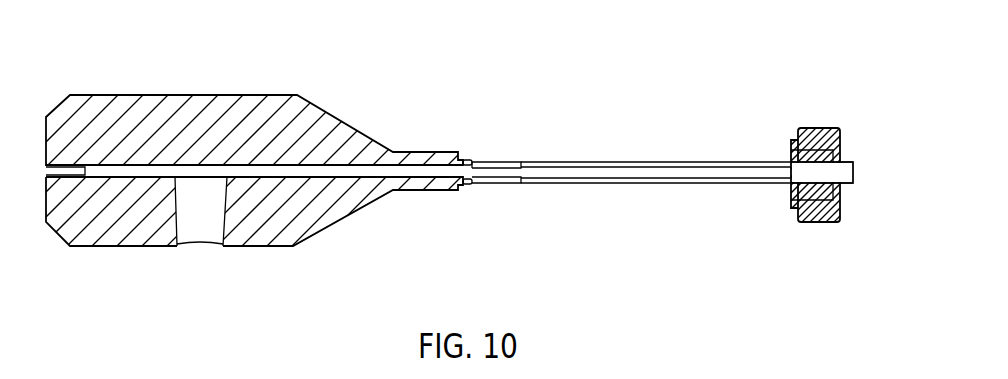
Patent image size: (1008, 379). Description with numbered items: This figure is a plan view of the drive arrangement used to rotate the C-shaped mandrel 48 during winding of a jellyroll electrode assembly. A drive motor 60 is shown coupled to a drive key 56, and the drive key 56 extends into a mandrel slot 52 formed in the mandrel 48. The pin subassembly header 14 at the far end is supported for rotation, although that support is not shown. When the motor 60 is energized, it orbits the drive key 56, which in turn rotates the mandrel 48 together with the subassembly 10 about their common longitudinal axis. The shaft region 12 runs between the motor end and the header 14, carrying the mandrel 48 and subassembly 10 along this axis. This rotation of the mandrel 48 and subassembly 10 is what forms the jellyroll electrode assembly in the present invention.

The subassembly 10 is at (468, 159).
The shaft 12 is at (662, 178).
The pin subassembly header 14 is at (836, 117).
The mandrel 48 is at (705, 183).
The mandrel slot 52 is at (523, 163).
The drive key 56 is at (487, 173).
The drive motor 60 is at (307, 108).